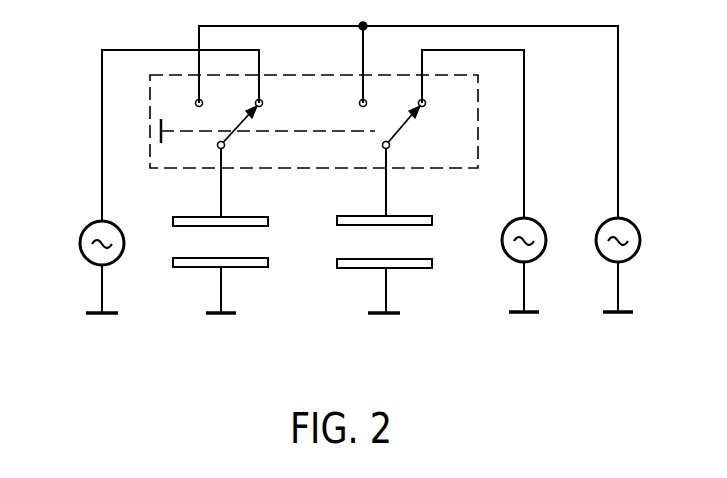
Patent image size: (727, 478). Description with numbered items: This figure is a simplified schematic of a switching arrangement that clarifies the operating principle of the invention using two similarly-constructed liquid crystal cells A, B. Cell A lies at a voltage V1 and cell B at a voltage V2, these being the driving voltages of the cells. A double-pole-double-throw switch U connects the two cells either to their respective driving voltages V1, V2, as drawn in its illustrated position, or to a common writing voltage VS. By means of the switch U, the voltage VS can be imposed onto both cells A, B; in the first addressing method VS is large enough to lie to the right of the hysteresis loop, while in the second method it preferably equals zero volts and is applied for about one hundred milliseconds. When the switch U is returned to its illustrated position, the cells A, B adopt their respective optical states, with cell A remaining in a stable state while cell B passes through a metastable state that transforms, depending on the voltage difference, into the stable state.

The voltage V1 is at (85, 257).
The voltage V2 is at (535, 251).
The voltage VS is at (629, 251).
The liquid crystal cell A is at (220, 230).
The liquid crystal cell B is at (384, 230).
The double-pole-double-throw switch U is at (451, 152).